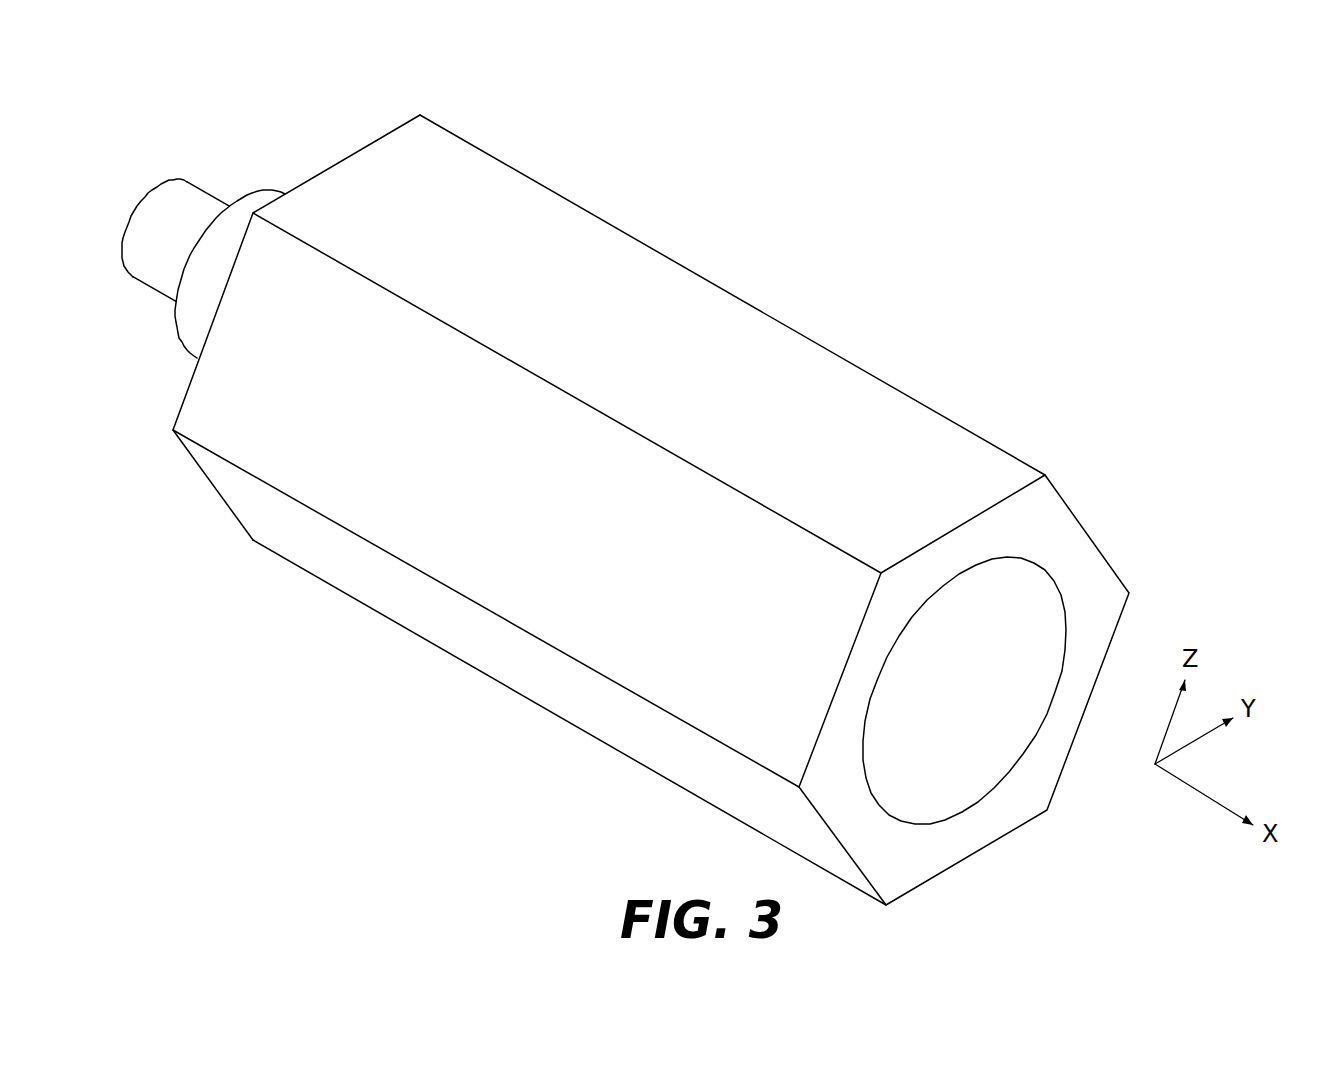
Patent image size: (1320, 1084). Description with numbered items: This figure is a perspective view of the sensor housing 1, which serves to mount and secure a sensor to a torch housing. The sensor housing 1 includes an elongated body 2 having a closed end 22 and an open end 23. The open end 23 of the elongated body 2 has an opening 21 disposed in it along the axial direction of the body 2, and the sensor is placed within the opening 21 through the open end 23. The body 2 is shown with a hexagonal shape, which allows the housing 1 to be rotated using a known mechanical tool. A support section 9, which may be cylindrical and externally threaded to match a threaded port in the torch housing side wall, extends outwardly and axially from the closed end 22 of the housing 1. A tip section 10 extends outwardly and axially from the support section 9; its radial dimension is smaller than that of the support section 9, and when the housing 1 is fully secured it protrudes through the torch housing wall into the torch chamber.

The sensor housing 1 is at (826, 279).
The elongated body 2 is at (827, 383).
The support section 9 is at (247, 208).
The tip section 10 is at (166, 195).
The opening 21 is at (960, 715).
The closed end 22 is at (368, 145).
The open end 23 is at (1062, 518).